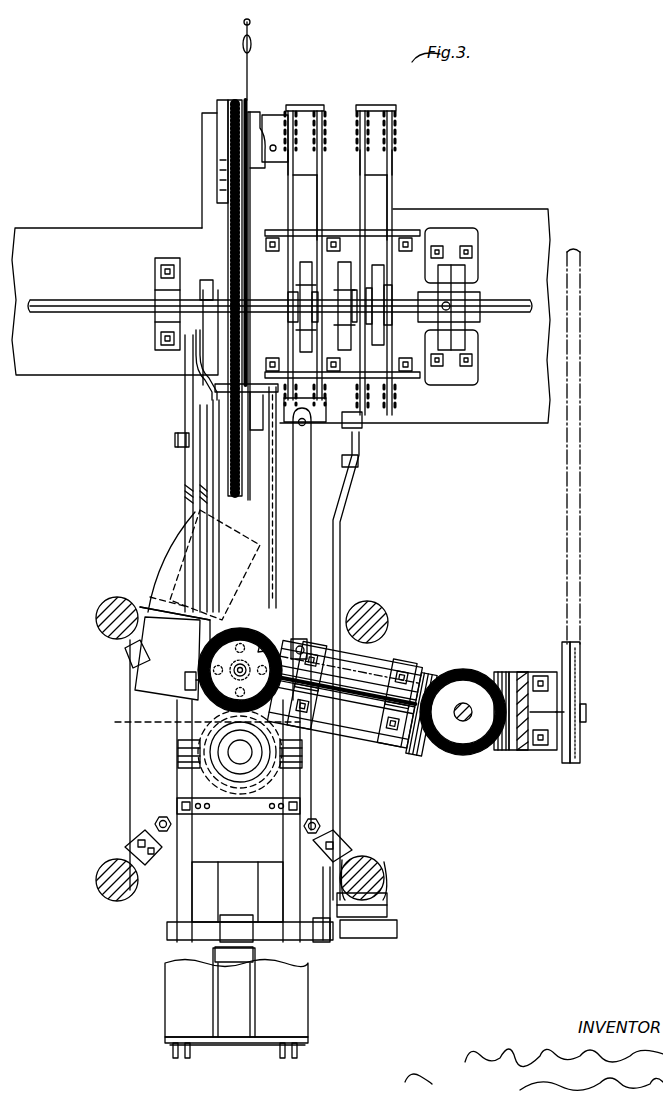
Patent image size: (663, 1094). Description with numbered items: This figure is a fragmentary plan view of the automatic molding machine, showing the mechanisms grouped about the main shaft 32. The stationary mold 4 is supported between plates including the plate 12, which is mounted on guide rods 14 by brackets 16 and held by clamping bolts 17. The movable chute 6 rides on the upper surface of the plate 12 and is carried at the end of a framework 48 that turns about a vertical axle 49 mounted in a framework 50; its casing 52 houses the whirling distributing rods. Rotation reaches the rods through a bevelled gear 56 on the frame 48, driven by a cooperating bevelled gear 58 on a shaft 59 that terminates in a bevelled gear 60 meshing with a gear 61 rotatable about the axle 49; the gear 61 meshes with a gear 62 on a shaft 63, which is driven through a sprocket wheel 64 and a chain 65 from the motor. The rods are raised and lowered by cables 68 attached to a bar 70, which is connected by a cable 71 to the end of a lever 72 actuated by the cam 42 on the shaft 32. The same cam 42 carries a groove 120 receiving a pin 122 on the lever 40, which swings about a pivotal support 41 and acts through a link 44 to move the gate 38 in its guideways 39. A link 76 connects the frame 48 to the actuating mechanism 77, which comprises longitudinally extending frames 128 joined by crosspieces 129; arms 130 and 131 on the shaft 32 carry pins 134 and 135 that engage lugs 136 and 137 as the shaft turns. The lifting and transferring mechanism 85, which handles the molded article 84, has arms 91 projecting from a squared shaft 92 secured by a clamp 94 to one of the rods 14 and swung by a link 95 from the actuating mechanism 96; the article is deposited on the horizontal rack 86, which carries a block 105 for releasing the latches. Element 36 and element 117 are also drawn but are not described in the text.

The stationary mold 4 is at (199, 723).
The movable chute 6 is at (172, 653).
The plate 12 is at (140, 822).
The guide rods 14 is at (96, 618).
The brackets 16 is at (128, 652).
The clamping bolts 17 is at (172, 826).
The shaft 32 is at (62, 300).
The rod 36 is at (200, 548).
The gate 38 is at (160, 596).
The guideways 39 is at (168, 703).
The lever 40 is at (185, 520).
The pivotal support 41 is at (175, 441).
The cam 42 is at (234, 157).
The link 44 is at (185, 682).
The framework 48 is at (380, 715).
The vertical axle 49 is at (466, 702).
The framework 50 is at (521, 672).
The casing 52 is at (266, 636).
The bevelled gear 56 is at (254, 628).
The bevelled gear 58 is at (305, 640).
The shaft 59 is at (358, 662).
The bevelled gear 60 is at (424, 662).
The gear 61 is at (458, 744).
The gear 62 is at (500, 750).
The shaft 63 is at (586, 713).
The sprocket wheel 64 is at (580, 680).
The chain 65 is at (572, 651).
The cables 68 is at (269, 520).
The bar 70 is at (258, 431).
The cable 71 is at (246, 183).
The lever 72 is at (251, 30).
The link 76 is at (311, 536).
The actuating mechanism 77 is at (317, 183).
The molded article 84 is at (215, 768).
The lifting and transferring mechanism 85 is at (178, 752).
The horizontal rack 86 is at (182, 996).
The arms 91 is at (290, 885).
The squared shaft 92 is at (318, 942).
The clamp 94 is at (388, 902).
The link 95 is at (340, 561).
The actuating mechanism 96 is at (388, 183).
The block 105 is at (228, 1063).
The plate 117 is at (226, 100).
The groove 120 is at (226, 130).
The pin 122 is at (208, 288).
The longitudinally extending frames 128 is at (345, 170).
The crosspieces 129 is at (305, 112).
The arm 130 is at (376, 262).
The arm 131 is at (368, 324).
The pin 134 is at (300, 320).
The pin 135 is at (350, 280).
The lug 136 is at (388, 285).
The lug 137 is at (290, 292).